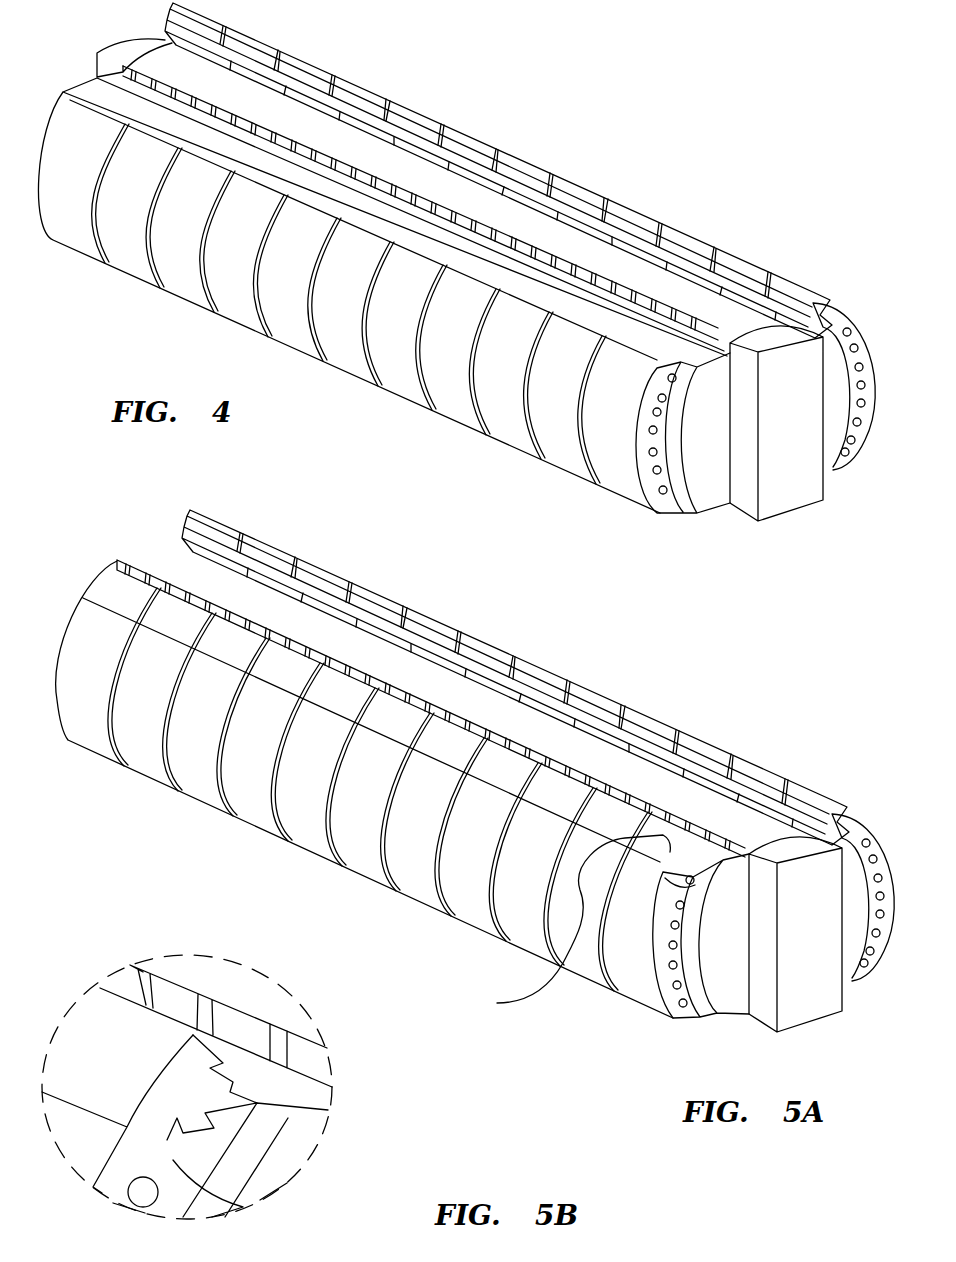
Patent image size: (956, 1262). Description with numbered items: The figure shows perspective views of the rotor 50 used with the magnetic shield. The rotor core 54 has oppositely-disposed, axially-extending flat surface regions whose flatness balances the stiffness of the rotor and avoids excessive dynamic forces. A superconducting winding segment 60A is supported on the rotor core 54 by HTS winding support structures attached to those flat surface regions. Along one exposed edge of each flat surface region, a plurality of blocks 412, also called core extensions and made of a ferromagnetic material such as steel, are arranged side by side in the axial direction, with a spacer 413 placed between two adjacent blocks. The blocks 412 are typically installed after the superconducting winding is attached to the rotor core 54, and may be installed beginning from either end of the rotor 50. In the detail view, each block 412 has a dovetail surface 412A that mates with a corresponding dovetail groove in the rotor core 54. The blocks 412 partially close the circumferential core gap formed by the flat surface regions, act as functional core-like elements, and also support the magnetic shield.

In FIG. 4, the rotor 50 is at (456, 289).
In FIG. 5A, the rotor 50 is at (475, 767).
In FIG. 4, the superconducting winding segment 60A is at (717, 300).
In FIG. 5A, the superconducting winding segment 60A is at (483, 654).
In FIG. 4, the rotor core 54 is at (703, 463).
In FIG. 5A, the rotor core 54 is at (730, 962).
In FIG. 5B, the rotor core 54 is at (210, 1217).
In FIG. 5A, the blocks 412 is at (118, 590).
In FIG. 5B, the blocks 412 is at (197, 1050).
In FIG. 5A, the spacer 413 is at (237, 628).
In FIG. 5B, the dovetail surface 412A is at (203, 1115).